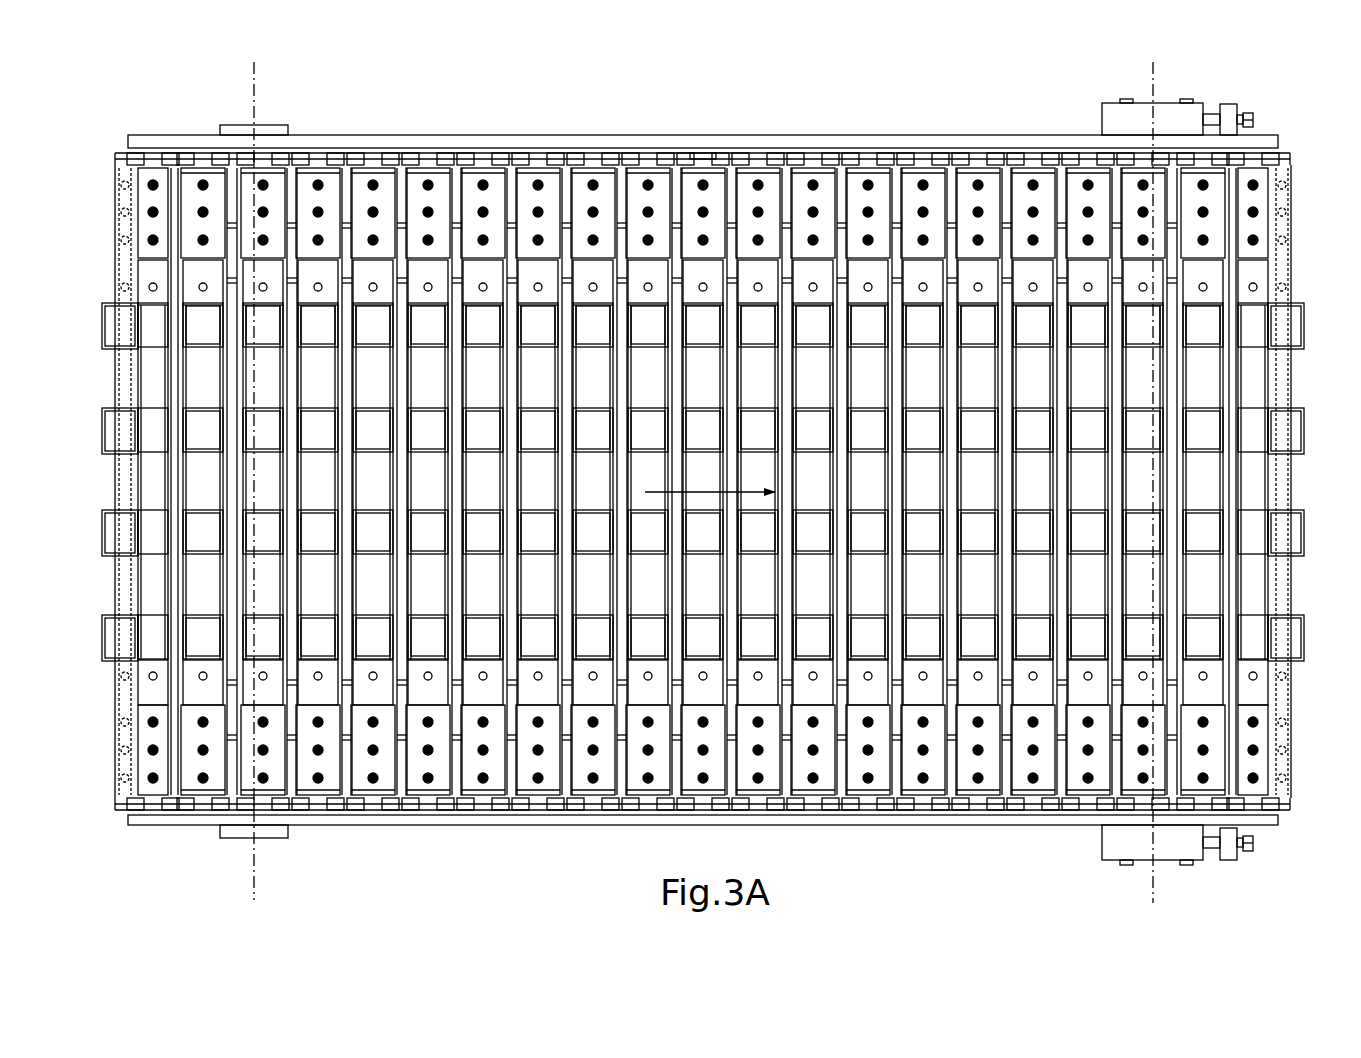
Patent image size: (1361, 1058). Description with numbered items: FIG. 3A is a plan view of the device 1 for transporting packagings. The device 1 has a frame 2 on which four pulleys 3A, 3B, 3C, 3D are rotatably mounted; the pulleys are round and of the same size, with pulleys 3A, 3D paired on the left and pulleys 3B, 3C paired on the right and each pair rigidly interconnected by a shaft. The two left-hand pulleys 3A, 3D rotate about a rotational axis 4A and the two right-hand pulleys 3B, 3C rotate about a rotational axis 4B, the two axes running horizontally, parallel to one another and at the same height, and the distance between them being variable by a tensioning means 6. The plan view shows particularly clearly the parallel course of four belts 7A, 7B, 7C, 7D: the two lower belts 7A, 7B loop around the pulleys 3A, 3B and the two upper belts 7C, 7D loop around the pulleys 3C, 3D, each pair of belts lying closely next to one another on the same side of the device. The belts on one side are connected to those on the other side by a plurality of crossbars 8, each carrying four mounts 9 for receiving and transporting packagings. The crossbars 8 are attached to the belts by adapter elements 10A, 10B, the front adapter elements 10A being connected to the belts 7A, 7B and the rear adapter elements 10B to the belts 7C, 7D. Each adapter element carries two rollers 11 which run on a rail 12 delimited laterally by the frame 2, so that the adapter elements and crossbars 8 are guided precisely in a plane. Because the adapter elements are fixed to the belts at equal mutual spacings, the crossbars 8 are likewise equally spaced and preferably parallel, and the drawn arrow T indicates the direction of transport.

The device 1 is at (83, 110).
The frame 2 is at (818, 143).
The pulley 3A is at (207, 840).
The pulley 3B is at (1085, 842).
The pulley 3C is at (1272, 115).
The pulley 3D is at (207, 128).
The rotational axis 4A is at (257, 95).
The rotational axis 4B is at (1150, 88).
The tensioning means 6 is at (1168, 845).
The belt 7A is at (1170, 767).
The belt 7B is at (1170, 712).
The belt 7C is at (1170, 252).
The belt 7D is at (1170, 196).
The crossbar 8 is at (205, 480).
The mount 9 is at (1208, 323).
The adapter element 10A is at (968, 760).
The adapter element 10B is at (965, 205).
The roller 11 is at (500, 157).
The rail 12 is at (704, 157).
The transport direction T is at (710, 477).